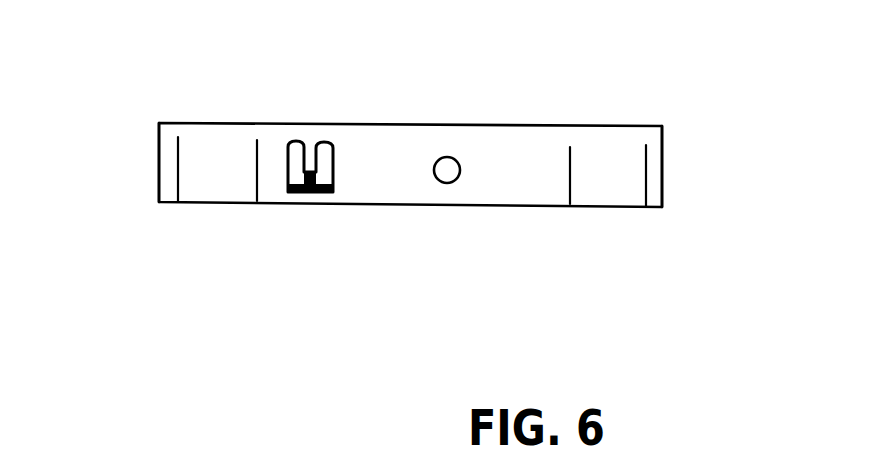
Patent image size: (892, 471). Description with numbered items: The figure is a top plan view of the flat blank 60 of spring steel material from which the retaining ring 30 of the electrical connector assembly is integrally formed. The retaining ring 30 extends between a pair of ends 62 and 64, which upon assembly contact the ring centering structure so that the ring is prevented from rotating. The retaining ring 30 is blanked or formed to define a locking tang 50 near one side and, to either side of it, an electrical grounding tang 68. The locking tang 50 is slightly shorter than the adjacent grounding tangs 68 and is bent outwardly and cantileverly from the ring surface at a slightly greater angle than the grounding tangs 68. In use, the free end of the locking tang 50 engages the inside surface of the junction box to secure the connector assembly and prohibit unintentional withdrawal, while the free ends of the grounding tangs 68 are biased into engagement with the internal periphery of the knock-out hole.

The retaining ring 30 is at (478, 54).
The locking tang 50 is at (318, 196).
The blank 60 is at (590, 128).
The end 62 is at (160, 140).
The end 64 is at (670, 152).
The electrical grounding tang 68 is at (208, 193).